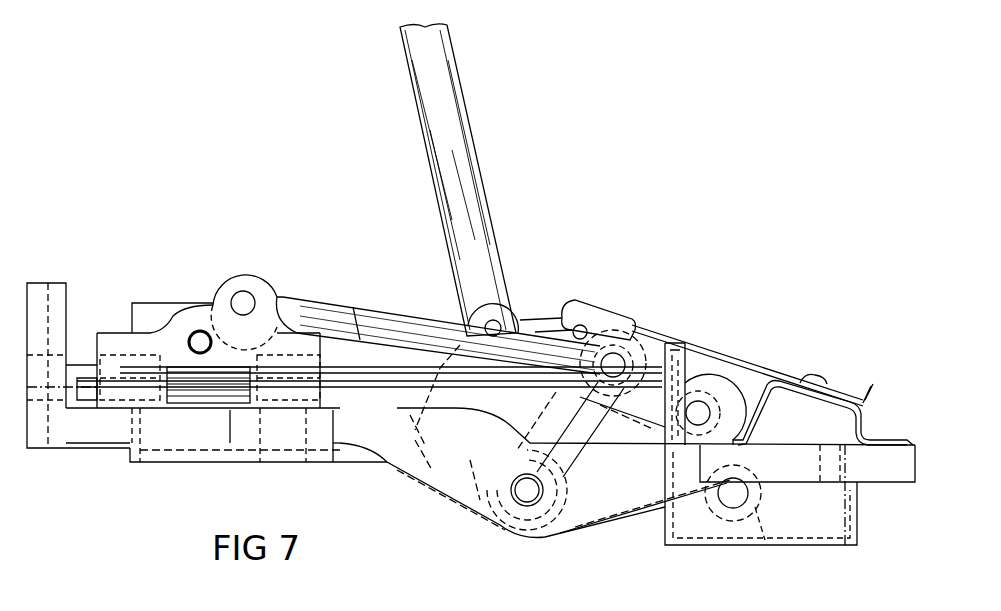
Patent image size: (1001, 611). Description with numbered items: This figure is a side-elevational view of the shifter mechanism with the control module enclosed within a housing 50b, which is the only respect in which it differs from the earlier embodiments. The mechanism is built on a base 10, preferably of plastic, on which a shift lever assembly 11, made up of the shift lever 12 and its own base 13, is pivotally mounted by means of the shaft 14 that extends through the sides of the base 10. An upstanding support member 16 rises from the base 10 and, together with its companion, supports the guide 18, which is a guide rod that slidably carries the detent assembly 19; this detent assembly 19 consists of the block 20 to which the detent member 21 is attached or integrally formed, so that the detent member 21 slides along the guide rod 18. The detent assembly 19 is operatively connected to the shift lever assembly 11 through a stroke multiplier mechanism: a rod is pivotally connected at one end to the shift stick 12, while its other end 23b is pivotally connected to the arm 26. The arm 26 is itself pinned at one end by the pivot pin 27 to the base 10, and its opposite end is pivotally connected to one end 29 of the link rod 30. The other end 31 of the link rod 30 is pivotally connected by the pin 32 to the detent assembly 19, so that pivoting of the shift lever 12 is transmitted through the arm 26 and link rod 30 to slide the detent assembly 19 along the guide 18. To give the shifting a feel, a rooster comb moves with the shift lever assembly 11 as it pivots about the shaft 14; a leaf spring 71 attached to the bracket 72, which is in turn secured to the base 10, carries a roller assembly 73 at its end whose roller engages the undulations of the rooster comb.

The base 10 is at (433, 450).
The shift lever assembly 11 is at (515, 268).
The shift lever 12 is at (452, 124).
The base of the shift lever assembly 13 is at (447, 500).
The shaft 14 is at (525, 493).
The upstanding support member 16 is at (58, 335).
The guide 18 is at (390, 432).
The detent assembly 19 is at (128, 382).
The block 20 is at (283, 392).
The detent member 21 is at (345, 395).
The other end of rod 23b is at (720, 396).
The arm 26 is at (644, 418).
The pivot pin 27 is at (758, 530).
The one end of link rod 29 is at (636, 343).
The link rod 30 is at (405, 318).
The other end of link rod 31 is at (233, 276).
The pin 32 is at (245, 300).
The housing 50b is at (155, 316).
The leaf spring 71 is at (712, 350).
The bracket 72 is at (862, 420).
The roller assembly 73 is at (588, 316).